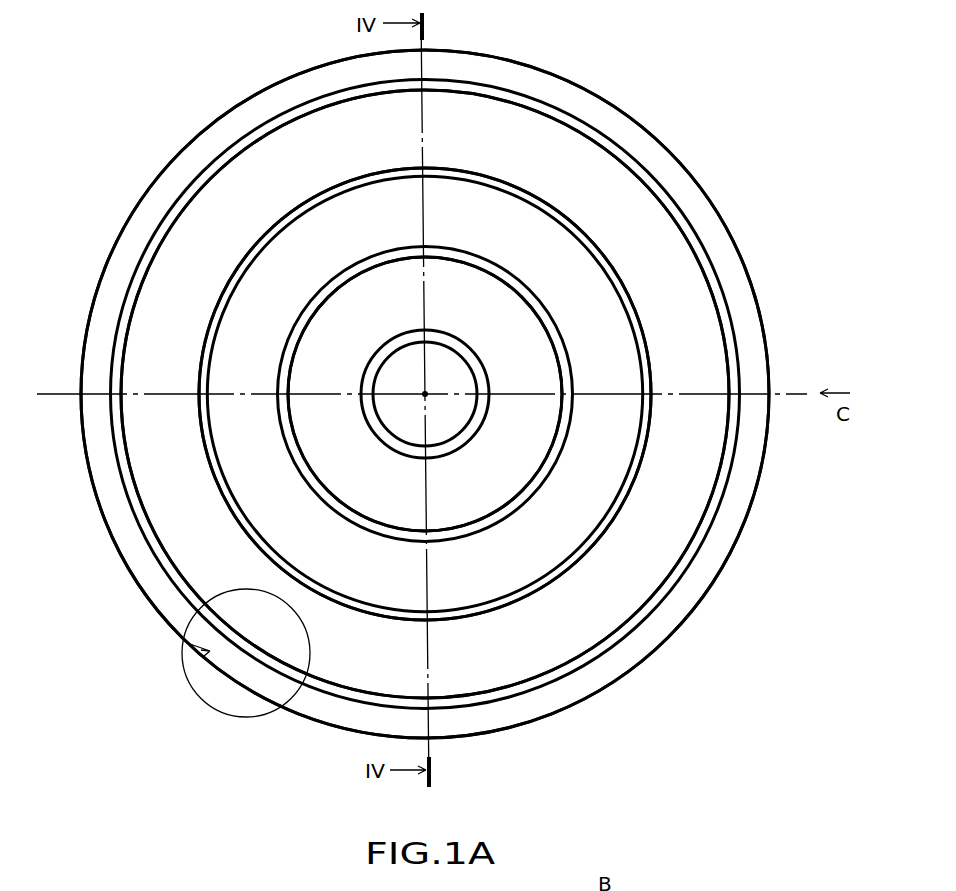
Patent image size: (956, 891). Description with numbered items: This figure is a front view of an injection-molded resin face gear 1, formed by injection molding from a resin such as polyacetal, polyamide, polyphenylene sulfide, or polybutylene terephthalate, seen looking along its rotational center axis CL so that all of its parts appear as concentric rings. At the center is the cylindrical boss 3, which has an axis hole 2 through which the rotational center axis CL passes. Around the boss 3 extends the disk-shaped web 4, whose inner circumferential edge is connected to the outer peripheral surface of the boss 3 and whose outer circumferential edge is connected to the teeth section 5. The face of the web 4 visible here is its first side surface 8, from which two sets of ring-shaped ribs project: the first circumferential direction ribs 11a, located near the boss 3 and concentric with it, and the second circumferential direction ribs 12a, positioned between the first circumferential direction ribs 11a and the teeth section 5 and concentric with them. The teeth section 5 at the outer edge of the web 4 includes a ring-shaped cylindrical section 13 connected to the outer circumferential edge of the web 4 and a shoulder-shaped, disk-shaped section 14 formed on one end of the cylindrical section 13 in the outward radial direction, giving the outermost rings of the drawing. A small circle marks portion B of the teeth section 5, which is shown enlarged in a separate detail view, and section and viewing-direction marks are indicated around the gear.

The injection-molded resin face gear 1 is at (567, 49).
The disk-shaped section 14 is at (684, 166).
The cylindrical section 13 is at (603, 142).
The first side surface 8 is at (654, 264).
The second circumferential direction ribs 12a is at (550, 210).
The first circumferential direction ribs 11a is at (498, 263).
The web 4 is at (310, 440).
The boss 3 is at (455, 336).
The axis hole 2 is at (396, 412).
The rotational center axis CL is at (426, 395).
The teeth section 5 is at (183, 640).
The portion B is at (183, 680).